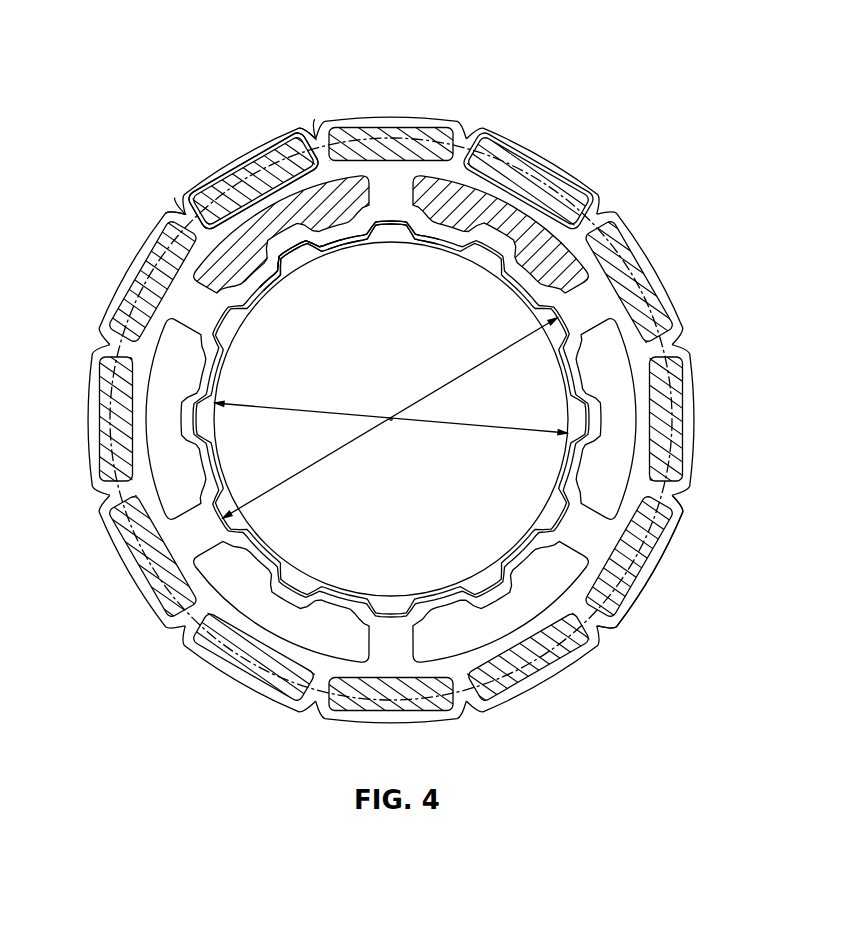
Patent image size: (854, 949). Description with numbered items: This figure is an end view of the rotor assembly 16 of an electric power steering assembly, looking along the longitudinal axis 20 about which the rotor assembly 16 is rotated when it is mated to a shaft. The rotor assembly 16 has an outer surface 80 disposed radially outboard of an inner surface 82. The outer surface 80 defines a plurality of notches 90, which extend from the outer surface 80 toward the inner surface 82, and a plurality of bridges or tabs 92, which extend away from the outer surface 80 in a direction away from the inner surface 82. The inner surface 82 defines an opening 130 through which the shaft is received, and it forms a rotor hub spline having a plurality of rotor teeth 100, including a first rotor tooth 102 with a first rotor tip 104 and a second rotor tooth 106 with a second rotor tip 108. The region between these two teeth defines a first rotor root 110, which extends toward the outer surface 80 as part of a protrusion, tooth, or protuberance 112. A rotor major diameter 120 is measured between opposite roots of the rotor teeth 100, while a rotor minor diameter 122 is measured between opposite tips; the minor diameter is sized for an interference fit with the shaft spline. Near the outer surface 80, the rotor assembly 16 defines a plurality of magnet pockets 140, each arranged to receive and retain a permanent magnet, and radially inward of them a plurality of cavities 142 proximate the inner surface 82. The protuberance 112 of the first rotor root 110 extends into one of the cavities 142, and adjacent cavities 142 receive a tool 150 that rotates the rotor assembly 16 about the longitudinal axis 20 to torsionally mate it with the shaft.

The rotor assembly 16 is at (118, 190).
The longitudinal axis 20 is at (391, 419).
The outer surface 80 is at (226, 165).
The inner surface 82 is at (216, 462).
The notches 90 is at (173, 212).
The tabs 92 is at (268, 140).
The rotor teeth 100 is at (379, 326).
The first rotor tooth 102 is at (271, 292).
The first rotor tip 104 is at (262, 292).
The second rotor tooth 106 is at (353, 250).
The second rotor tip 108 is at (356, 244).
The first rotor root 110 is at (287, 250).
The protuberance 112 is at (288, 232).
The rotor major diameter 120 is at (492, 360).
The rotor minor diameter 122 is at (263, 403).
The opening 130 is at (645, 570).
The magnet pockets 140 is at (263, 152).
The cavities 142 is at (250, 207).
The tool 150 is at (328, 197).